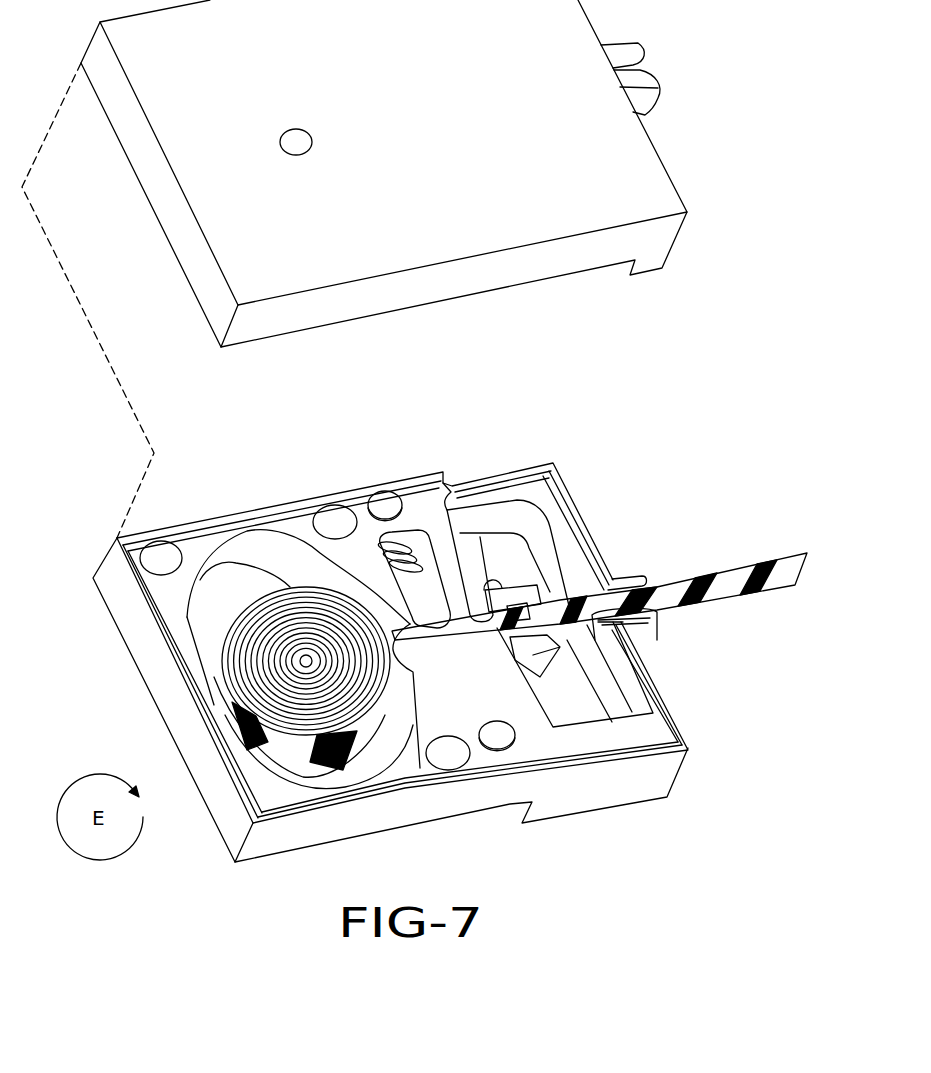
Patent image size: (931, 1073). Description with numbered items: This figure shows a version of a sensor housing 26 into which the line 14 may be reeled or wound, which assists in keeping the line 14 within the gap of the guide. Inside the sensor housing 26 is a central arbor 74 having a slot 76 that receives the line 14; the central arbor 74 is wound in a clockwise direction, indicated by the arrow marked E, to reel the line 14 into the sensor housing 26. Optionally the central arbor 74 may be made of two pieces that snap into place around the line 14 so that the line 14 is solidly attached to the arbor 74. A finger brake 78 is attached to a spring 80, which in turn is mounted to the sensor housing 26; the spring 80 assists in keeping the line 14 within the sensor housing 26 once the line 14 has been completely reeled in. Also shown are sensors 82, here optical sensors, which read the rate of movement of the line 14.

The line 14 is at (708, 590).
The sensor housing 26 is at (453, 99).
The central arbor 74 is at (310, 667).
The slot 76 is at (303, 660).
The finger brake 78 is at (428, 588).
The spring 80 is at (380, 542).
The sensors 82 is at (527, 592).